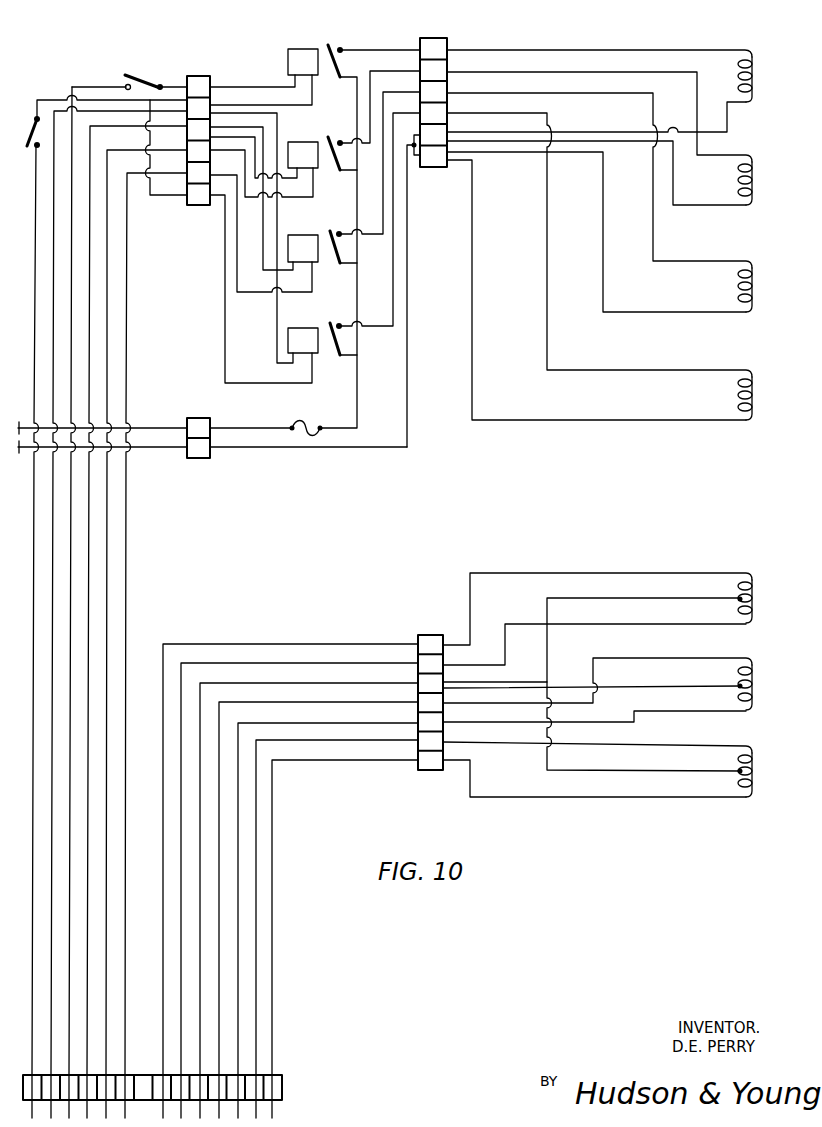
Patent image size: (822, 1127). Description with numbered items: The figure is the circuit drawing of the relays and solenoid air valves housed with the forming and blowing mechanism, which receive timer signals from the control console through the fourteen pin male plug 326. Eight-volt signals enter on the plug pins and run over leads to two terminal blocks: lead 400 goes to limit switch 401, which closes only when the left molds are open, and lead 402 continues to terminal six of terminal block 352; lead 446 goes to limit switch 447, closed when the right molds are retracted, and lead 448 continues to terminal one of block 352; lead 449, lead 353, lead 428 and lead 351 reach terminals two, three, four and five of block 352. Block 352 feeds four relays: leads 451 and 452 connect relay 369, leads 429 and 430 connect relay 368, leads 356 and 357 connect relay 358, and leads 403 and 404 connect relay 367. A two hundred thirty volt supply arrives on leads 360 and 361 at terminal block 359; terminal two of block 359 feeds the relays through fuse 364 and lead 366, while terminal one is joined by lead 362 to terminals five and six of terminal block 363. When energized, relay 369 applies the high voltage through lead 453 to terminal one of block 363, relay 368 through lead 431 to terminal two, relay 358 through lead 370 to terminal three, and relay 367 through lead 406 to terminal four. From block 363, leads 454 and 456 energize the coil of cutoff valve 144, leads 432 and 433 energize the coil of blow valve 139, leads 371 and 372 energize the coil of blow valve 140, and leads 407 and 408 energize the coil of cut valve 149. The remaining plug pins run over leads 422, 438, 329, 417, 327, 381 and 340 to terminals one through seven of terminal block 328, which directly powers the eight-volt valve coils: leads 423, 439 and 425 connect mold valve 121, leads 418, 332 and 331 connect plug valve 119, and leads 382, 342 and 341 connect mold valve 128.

The lead 400 is at (34, 560).
The limit switch 401 is at (33, 117).
The lead 402 is at (67, 84).
The lead 446 is at (92, 84).
The limit switch 447 is at (142, 72).
The lead 448 is at (161, 85).
The lead 449 is at (53, 578).
The lead 353 is at (89, 510).
The lead 428 is at (108, 330).
The lead 351 is at (127, 523).
The terminal block 352 is at (198, 76).
The lead 451 is at (280, 85).
The lead 452 is at (307, 100).
The relay 369 is at (310, 48).
The lead 453 is at (389, 50).
The lead 431 is at (402, 71).
The relay 368 is at (316, 141).
The lead 429 is at (314, 172).
The lead 430 is at (298, 188).
The lead 403 is at (226, 219).
The relay 358 is at (289, 235).
The lead 357 is at (263, 253).
The lead 356 is at (237, 272).
The lead 404 is at (273, 308).
The relay 367 is at (290, 328).
The lead 366 is at (357, 394).
The fuse 364 is at (301, 421).
The lead 361 is at (165, 426).
The terminal block 359 is at (191, 418).
The lead 360 is at (171, 447).
The lead 362 is at (407, 400).
The lead 370 is at (378, 232).
The lead 406 is at (393, 325).
The terminal block 363 is at (440, 38).
The lead 454 is at (573, 50).
The valve 144 is at (756, 52).
The lead 456 is at (735, 128).
The lead 432 is at (733, 155).
The valve 139 is at (756, 163).
The lead 433 is at (727, 206).
The lead 372 is at (680, 261).
The valve 140 is at (757, 268).
The lead 371 is at (672, 311).
The lead 407 is at (608, 370).
The valve 149 is at (757, 377).
The lead 408 is at (657, 420).
The terminal block 328 is at (433, 770).
The lead 422 is at (212, 644).
The lead 438 is at (212, 663).
The lead 329 is at (240, 683).
The lead 417 is at (255, 702).
The lead 327 is at (276, 723).
The lead 381 is at (372, 740).
The lead 340 is at (273, 1055).
The fourteen pin male plug 326 is at (283, 1088).
The lead 423 is at (620, 572).
The valve 121 is at (755, 573).
The lead 425 is at (620, 598).
The lead 439 is at (620, 625).
The lead 418 is at (628, 658).
The plug valve 119 is at (757, 663).
The lead 332 is at (640, 686).
The lead 331 is at (640, 711).
The lead 382 is at (687, 745).
The valve 128 is at (757, 753).
The lead 342 is at (627, 771).
The lead 341 is at (660, 797).